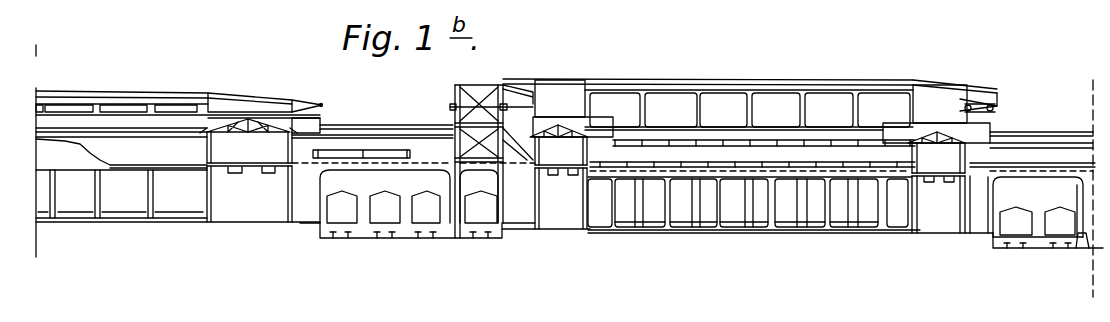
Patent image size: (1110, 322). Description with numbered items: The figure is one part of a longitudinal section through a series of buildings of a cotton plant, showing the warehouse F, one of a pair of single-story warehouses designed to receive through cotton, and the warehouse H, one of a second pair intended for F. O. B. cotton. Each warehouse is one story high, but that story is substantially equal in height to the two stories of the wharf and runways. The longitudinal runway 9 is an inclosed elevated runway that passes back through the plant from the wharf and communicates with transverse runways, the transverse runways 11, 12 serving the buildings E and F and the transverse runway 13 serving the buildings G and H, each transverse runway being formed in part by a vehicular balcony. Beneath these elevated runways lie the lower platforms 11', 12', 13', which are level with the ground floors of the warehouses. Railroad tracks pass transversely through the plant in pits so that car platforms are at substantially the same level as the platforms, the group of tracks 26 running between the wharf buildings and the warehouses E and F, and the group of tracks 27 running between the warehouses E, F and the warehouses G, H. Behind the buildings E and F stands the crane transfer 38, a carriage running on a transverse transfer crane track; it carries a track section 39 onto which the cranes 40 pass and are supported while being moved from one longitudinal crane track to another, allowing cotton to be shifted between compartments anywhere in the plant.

The warehouse H is at (160, 75).
The warehouse F is at (800, 68).
The longitudinal runway 9 is at (475, 149).
The transverse runway 11 is at (936, 154).
The lower platform 11' is at (941, 204).
The transverse runway 12 is at (571, 142).
The lower platform 12' is at (546, 198).
The transverse runway 13 is at (248, 142).
The lower platform 13' is at (249, 194).
The group of railroad tracks 26 is at (1053, 249).
The group of railroad tracks 27 is at (418, 240).
The crane transfer 38 is at (479, 113).
The track section 39 is at (452, 107).
The crane 40 is at (992, 104).